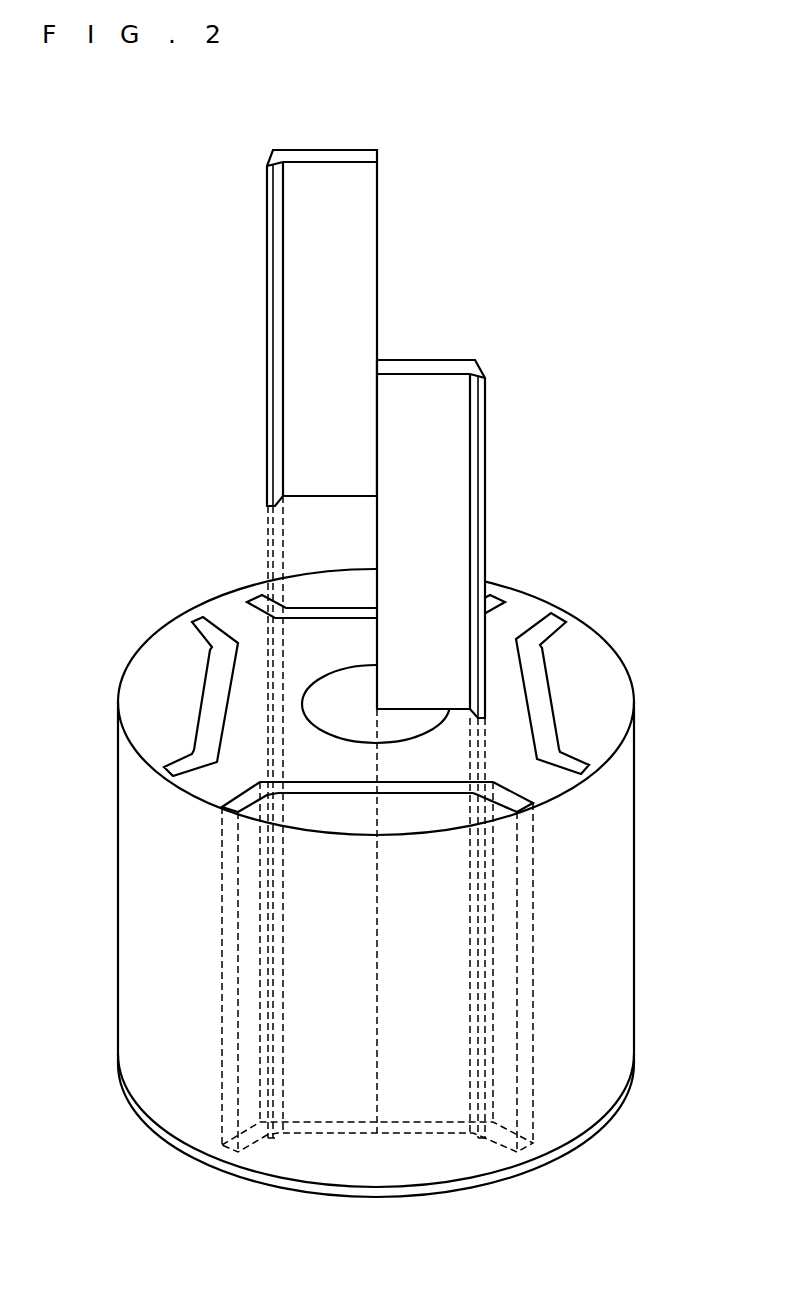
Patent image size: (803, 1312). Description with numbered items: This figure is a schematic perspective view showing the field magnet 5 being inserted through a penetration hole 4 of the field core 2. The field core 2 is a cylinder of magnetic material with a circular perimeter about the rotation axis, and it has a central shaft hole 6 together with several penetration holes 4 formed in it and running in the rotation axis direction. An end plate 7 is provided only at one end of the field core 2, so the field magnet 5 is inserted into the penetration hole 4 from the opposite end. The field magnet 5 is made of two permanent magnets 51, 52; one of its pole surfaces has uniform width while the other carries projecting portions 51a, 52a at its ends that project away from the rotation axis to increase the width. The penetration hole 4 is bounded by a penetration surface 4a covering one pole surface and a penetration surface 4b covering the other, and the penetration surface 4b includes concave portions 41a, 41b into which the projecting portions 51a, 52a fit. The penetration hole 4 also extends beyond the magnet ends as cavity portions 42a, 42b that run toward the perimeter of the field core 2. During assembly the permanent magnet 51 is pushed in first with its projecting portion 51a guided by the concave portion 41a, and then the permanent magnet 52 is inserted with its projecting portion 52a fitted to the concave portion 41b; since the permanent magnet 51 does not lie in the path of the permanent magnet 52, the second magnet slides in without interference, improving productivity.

The field core 2 is at (622, 912).
The penetration hole 4 is at (336, 609).
The penetration surface 4a is at (323, 784).
The penetration surface 4b is at (390, 791).
The concave portion 41a is at (277, 797).
The concave portion 41b is at (473, 796).
The cavity portion 42a is at (235, 803).
The cavity portion 42b is at (530, 804).
The field magnet 5 is at (377, 434).
The permanent magnet 51 is at (318, 328).
The projecting portion 51a is at (270, 277).
The permanent magnet 52 is at (468, 517).
The projecting portion 52a is at (483, 412).
The shaft hole 6 is at (344, 676).
The end plate 7 is at (610, 1122).